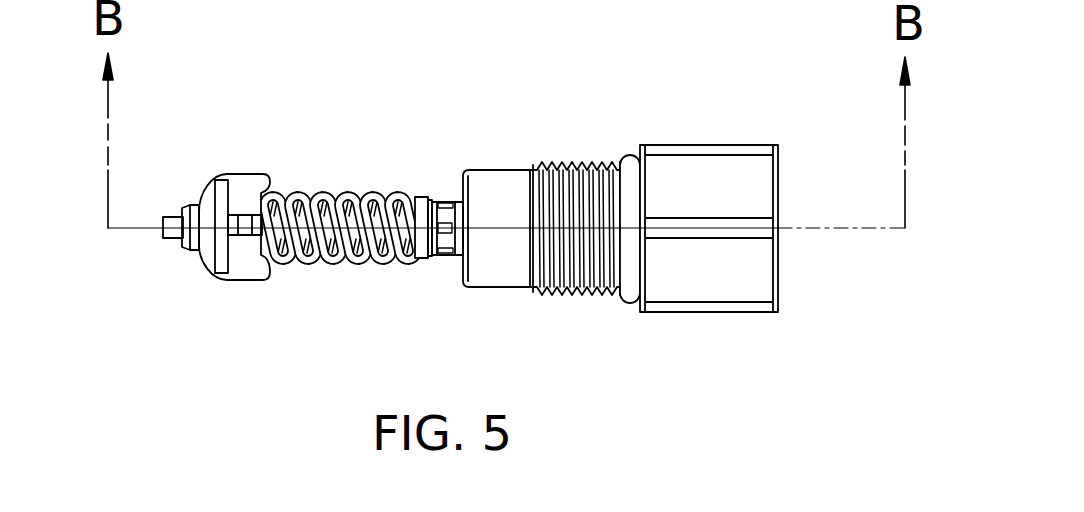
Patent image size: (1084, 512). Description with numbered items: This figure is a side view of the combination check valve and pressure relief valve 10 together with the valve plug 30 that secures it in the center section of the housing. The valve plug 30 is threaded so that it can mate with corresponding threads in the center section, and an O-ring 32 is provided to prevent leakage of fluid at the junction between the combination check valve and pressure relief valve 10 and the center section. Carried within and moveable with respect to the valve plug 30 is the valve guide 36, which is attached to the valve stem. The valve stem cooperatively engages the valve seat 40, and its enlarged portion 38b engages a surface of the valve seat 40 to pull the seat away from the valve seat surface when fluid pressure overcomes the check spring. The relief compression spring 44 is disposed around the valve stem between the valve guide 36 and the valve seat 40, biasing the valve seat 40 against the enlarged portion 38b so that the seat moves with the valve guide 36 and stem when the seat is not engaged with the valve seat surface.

The combination check valve and pressure relief valve 10 is at (797, 276).
The valve plug 30 is at (725, 313).
The O-ring 32 is at (631, 157).
The valve guide 36 is at (423, 193).
The enlarged portion of the valve stem 38b is at (195, 252).
The valve seat 40 is at (213, 272).
The relief compression spring 44 is at (301, 192).